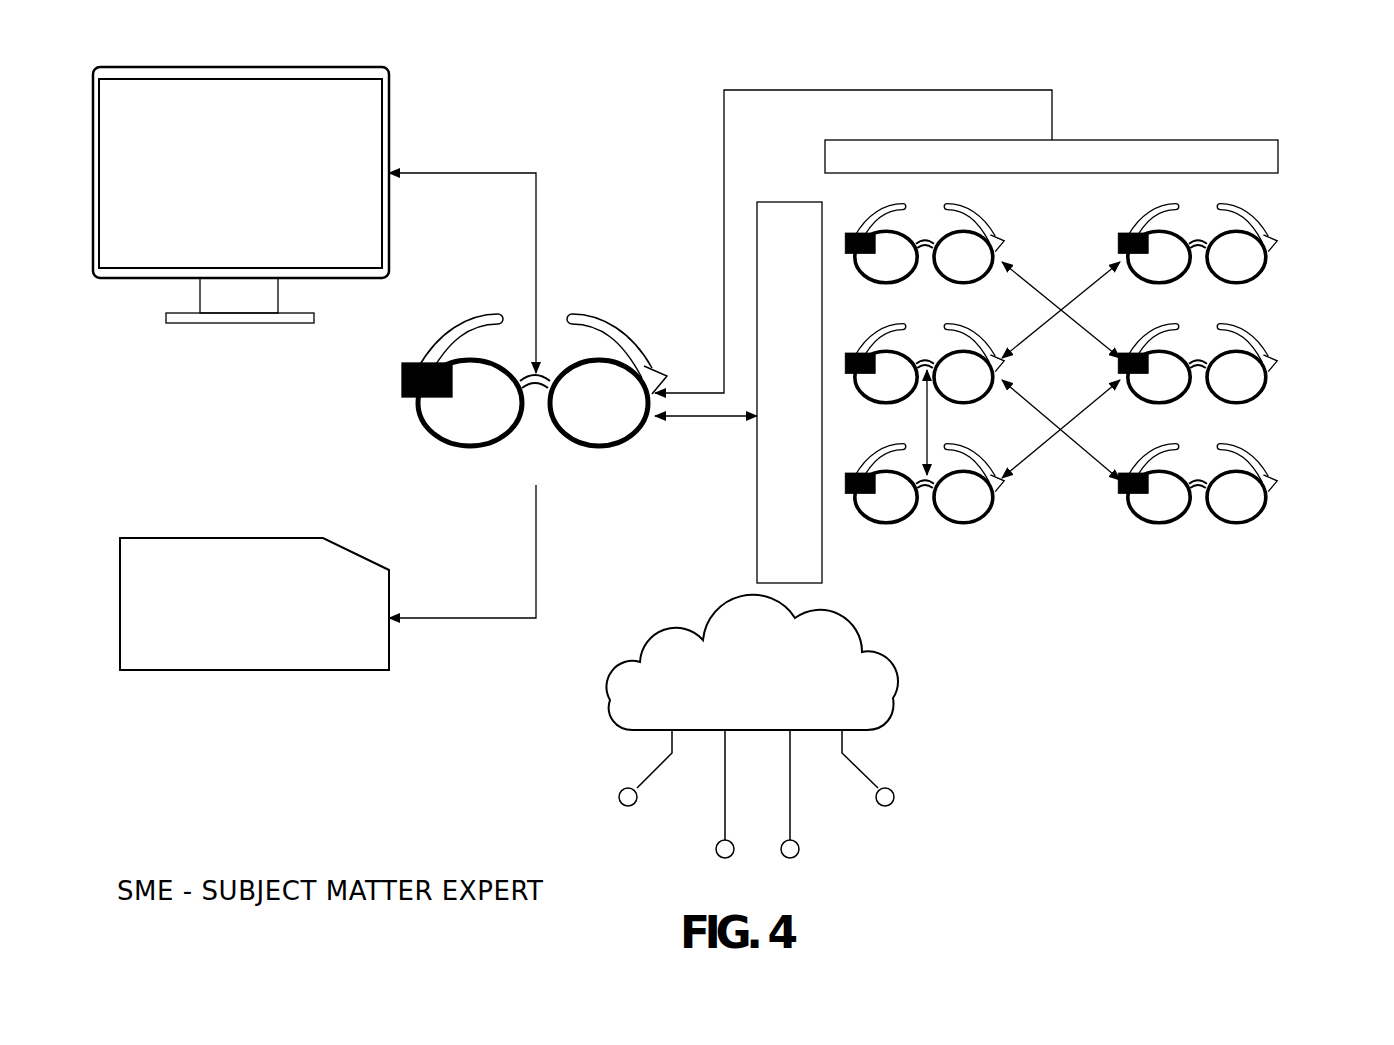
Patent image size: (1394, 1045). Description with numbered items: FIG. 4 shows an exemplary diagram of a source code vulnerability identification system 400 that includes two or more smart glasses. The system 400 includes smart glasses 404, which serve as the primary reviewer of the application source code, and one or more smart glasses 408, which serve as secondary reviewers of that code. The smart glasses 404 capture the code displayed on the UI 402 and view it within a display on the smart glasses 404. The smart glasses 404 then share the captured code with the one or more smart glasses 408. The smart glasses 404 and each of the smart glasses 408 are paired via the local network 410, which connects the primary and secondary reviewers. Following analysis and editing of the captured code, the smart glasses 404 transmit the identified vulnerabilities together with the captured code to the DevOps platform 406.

The source code vulnerability identification system 400 is at (1286, 63).
The UI 402 is at (290, 67).
The smart glasses 404 is at (608, 313).
The DevOps platform 406 is at (225, 538).
The smart glasses 408 is at (1286, 173).
The local network 410 is at (610, 700).